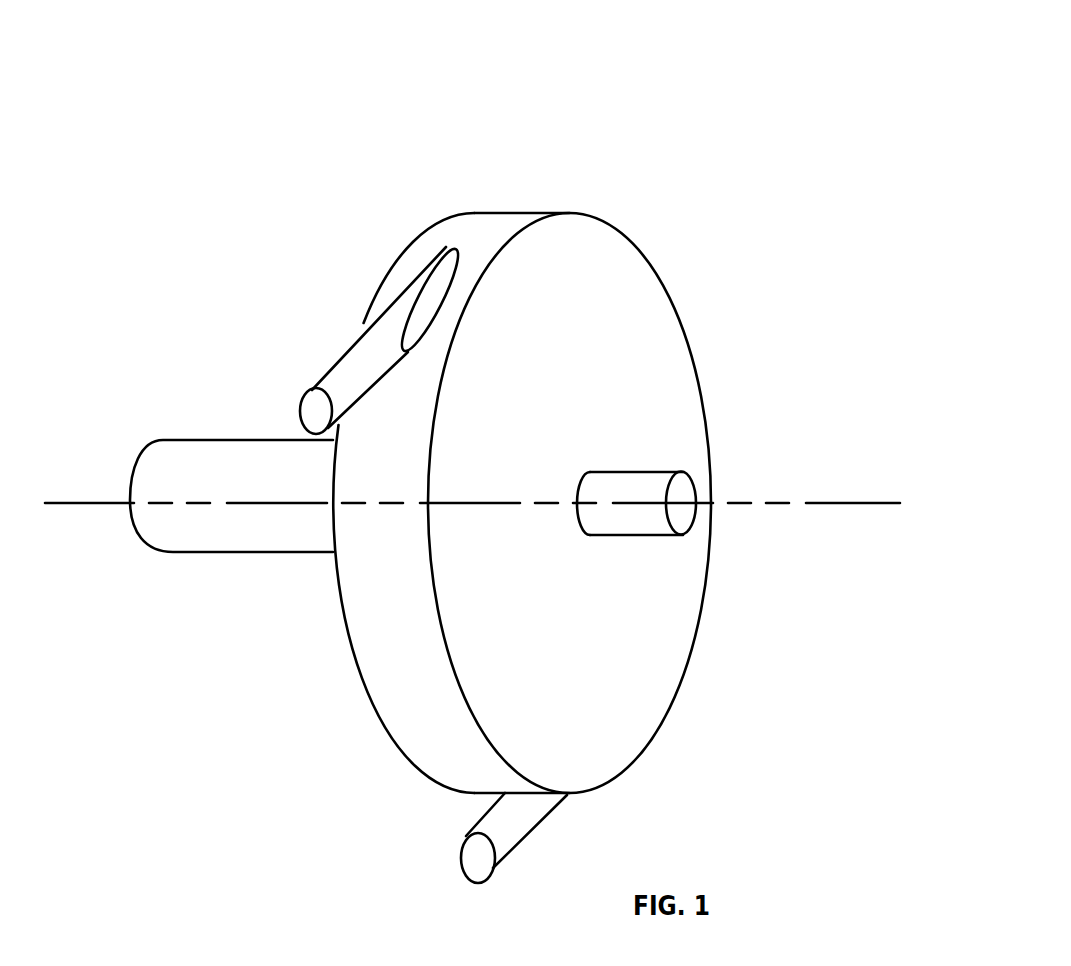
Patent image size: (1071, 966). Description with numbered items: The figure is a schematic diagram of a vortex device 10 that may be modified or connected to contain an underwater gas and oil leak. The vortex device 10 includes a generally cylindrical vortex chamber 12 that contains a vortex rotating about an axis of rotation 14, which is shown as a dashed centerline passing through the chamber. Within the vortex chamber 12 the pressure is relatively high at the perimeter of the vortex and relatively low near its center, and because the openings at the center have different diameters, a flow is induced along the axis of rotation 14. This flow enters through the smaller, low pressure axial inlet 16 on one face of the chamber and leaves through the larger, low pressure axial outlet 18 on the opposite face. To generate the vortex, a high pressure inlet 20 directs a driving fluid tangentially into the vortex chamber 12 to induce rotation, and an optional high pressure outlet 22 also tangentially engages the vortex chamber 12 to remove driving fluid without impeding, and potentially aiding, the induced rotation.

The vortex device 10 is at (607, 77).
The vortex chamber 12 is at (607, 223).
The axis of rotation 14 is at (853, 505).
The axial inlet 16 is at (688, 473).
The axial outlet 18 is at (130, 475).
The high pressure inlet 20 is at (458, 858).
The high pressure outlet 22 is at (298, 408).